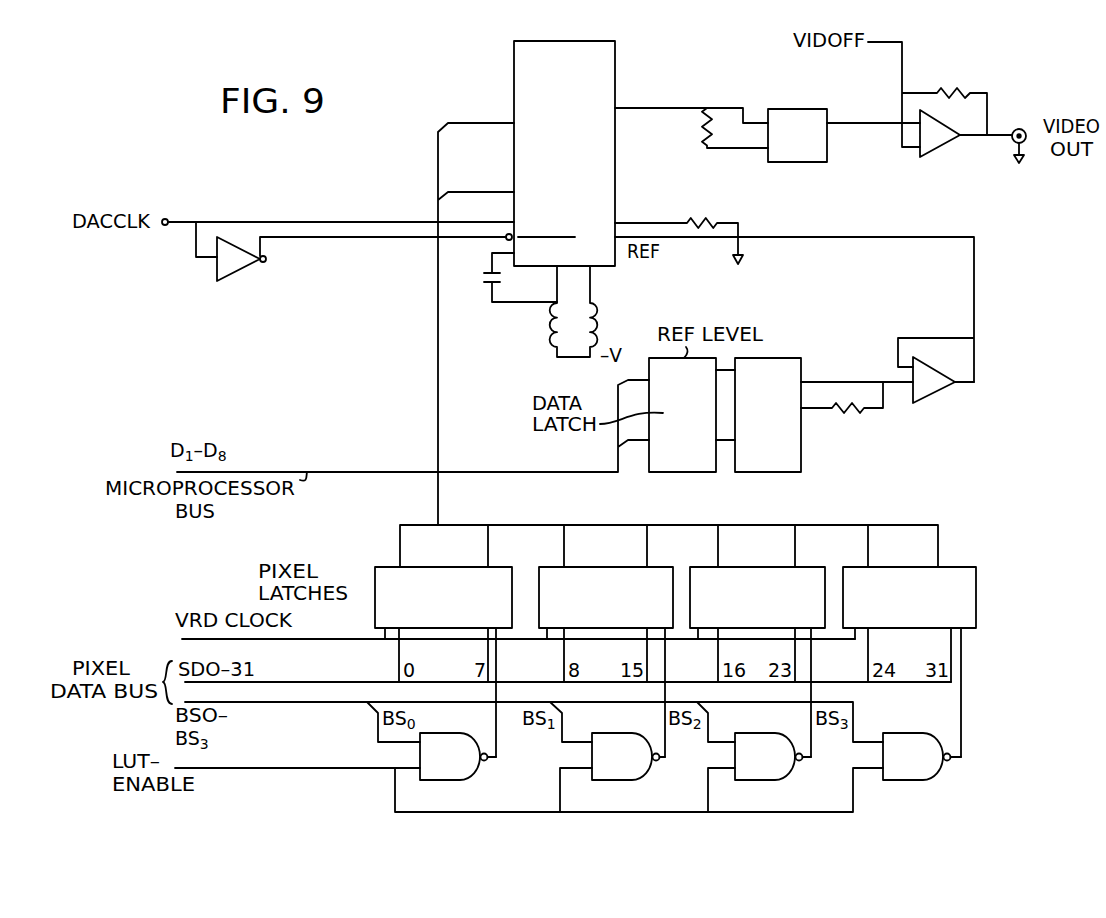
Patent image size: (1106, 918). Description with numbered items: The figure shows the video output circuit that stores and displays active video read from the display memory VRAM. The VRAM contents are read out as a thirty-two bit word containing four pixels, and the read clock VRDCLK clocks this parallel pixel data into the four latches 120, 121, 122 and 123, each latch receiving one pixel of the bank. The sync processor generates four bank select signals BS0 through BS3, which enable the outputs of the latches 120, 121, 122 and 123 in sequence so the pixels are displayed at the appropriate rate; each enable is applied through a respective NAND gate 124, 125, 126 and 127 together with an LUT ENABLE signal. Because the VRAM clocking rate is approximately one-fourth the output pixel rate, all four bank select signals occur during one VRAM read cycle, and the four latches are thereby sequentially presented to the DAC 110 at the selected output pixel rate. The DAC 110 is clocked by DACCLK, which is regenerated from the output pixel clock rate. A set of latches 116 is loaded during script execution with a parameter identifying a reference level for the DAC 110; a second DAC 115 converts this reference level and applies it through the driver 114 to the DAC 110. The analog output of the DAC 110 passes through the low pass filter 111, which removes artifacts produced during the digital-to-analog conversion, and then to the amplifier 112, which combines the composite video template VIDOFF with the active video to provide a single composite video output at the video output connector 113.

The DAC 110 is at (590, 167).
The low pass filter 111 is at (820, 193).
The amplifier 112 is at (967, 182).
The video output connector 113 is at (1027, 116).
The driver 114 is at (967, 429).
The DAC 115 is at (758, 472).
The set of latches 116 is at (700, 472).
The latch 120 is at (458, 605).
The latch 121 is at (622, 605).
The latch 122 is at (772, 605).
The latch 123 is at (925, 605).
The NAND gate 124 is at (466, 767).
The NAND gate 125 is at (636, 767).
The NAND gate 126 is at (777, 767).
The NAND gate 127 is at (922, 768).